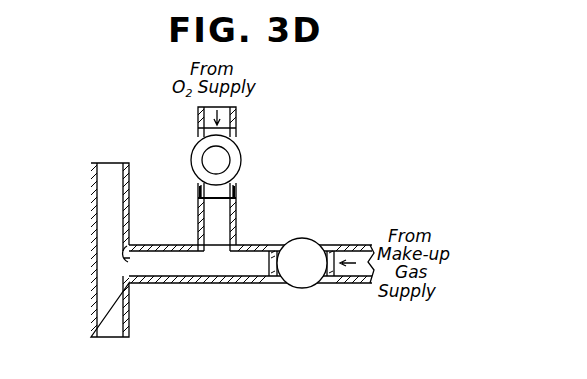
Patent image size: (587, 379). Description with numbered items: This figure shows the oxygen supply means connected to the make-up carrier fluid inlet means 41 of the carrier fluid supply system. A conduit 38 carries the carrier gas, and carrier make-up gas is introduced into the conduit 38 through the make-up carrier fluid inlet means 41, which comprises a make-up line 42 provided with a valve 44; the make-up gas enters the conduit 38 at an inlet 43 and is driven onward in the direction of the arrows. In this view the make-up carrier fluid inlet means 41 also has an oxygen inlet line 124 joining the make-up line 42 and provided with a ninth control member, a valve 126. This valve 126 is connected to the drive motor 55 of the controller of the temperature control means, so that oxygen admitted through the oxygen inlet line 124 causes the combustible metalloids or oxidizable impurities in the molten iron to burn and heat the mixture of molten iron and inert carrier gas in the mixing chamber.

The conduit 38 is at (91, 222).
The make-up carrier fluid inlet means 41 is at (305, 232).
The make-up line 42 is at (338, 248).
The inlet 43 is at (125, 246).
The valve 44 is at (297, 288).
The drive motor 55 is at (230, 163).
The oxygen inlet line 124 is at (198, 198).
The valve 126 is at (236, 150).